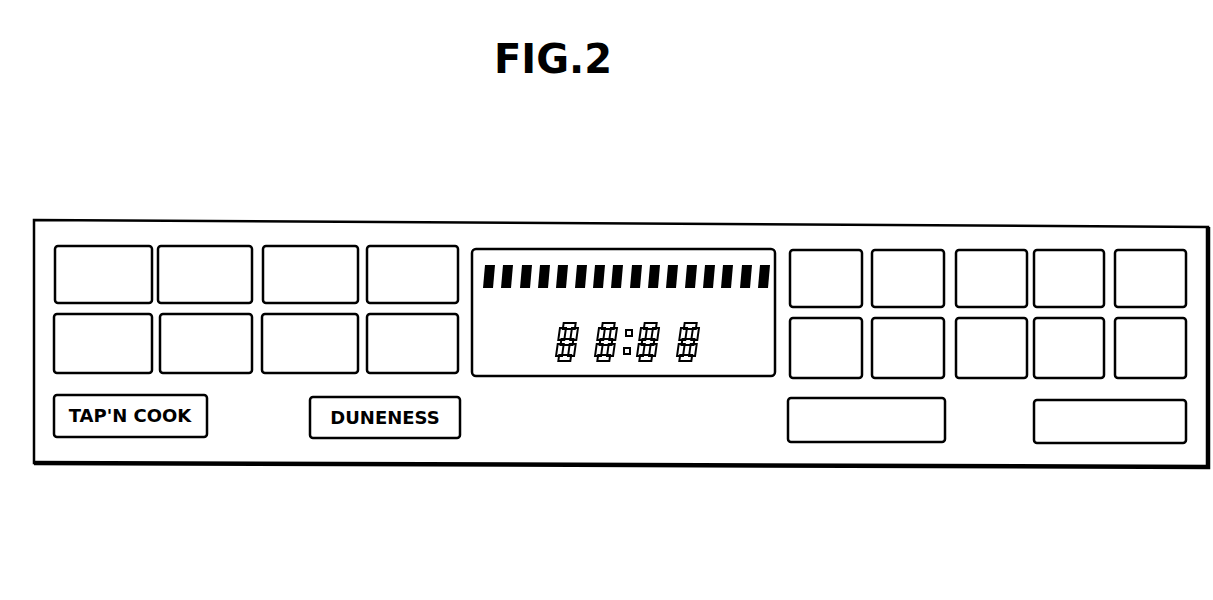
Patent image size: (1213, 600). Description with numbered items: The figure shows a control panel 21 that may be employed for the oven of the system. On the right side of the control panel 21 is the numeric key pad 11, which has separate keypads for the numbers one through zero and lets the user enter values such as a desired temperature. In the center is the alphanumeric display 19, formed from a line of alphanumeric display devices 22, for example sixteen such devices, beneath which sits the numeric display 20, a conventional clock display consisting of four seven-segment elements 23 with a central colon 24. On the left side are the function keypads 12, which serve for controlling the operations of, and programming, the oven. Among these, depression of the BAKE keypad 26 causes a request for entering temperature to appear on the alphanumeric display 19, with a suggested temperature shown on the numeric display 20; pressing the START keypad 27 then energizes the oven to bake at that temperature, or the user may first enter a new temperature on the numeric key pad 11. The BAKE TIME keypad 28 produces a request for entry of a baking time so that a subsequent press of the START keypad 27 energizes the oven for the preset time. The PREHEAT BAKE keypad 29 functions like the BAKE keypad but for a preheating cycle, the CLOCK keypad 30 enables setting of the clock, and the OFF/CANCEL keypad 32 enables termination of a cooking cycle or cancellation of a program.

The numeric key pad 11 is at (989, 264).
The function keypads 12 is at (256, 260).
The alphanumeric display 19 is at (603, 254).
The numeric display 20 is at (557, 336).
The control panel 21 is at (658, 466).
The alphanumeric display devices 22 is at (521, 289).
The seven-segment elements 23 is at (568, 325).
The central colon 24 is at (631, 329).
The BAKE keypad 26 is at (392, 251).
The START keypad 27 is at (788, 424).
The BAKE TIME keypad 28 is at (177, 248).
The PREHEAT BAKE keypad 29 is at (290, 249).
The CLOCK keypad 30 is at (95, 251).
The OFF/CANCEL keypad 32 is at (1034, 424).